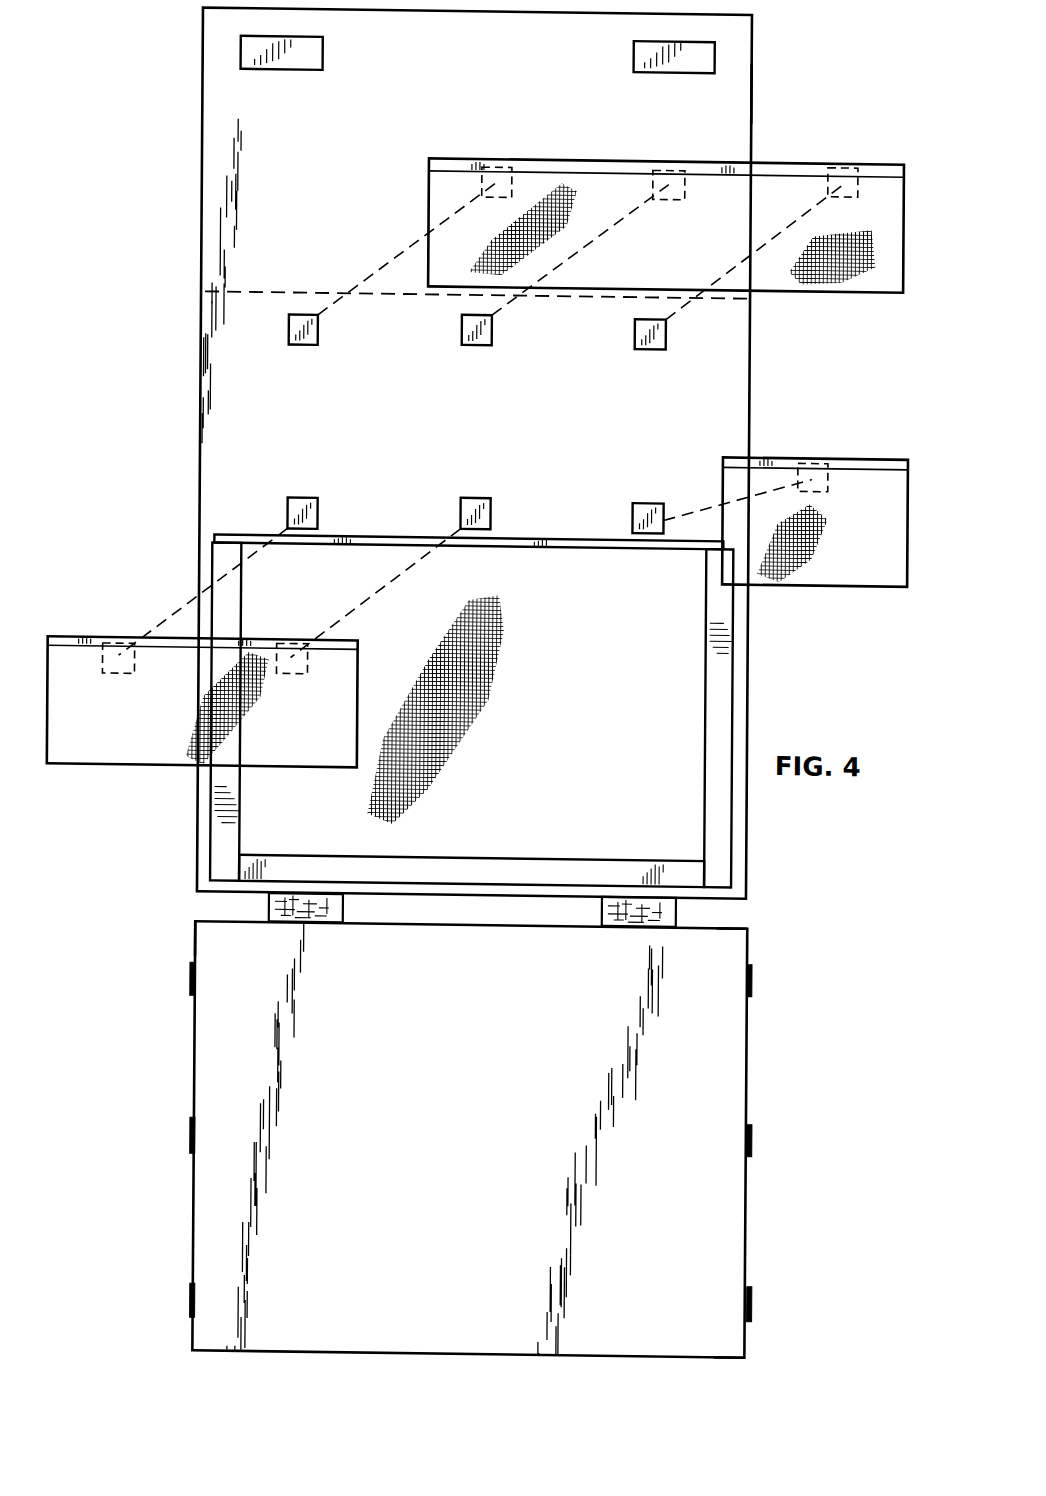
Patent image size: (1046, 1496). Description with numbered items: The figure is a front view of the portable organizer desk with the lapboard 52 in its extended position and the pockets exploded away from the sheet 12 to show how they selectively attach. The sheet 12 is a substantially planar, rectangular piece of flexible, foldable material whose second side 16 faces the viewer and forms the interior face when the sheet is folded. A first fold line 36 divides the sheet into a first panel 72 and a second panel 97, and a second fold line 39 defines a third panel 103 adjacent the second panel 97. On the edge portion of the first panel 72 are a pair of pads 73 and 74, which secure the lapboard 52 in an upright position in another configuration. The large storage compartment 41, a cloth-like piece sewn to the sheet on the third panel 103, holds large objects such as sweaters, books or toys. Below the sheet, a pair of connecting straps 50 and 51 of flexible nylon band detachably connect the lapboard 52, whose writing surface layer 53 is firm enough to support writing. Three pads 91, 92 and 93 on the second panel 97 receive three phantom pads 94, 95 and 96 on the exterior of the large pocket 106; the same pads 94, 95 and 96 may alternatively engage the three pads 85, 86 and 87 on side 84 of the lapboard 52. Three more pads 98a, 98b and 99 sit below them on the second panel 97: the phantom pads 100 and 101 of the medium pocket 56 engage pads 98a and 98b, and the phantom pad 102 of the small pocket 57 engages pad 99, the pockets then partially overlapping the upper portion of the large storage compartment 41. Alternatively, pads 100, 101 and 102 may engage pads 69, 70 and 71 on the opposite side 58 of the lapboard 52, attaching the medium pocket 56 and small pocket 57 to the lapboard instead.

The sheet 12 is at (749, 37).
The second side 16 is at (749, 93).
The first fold line 36 is at (293, 295).
The second fold line 39 is at (212, 540).
The large storage compartment 41 is at (735, 835).
The connecting strap 50 is at (325, 924).
The connecting strap 51 is at (628, 924).
The lapboard 52 is at (750, 945).
The writing surface layer 53 is at (436, 1130).
The medium pocket 56 is at (77, 641).
The small pocket 57 is at (766, 457).
The side of the lapboard 58 is at (750, 1353).
The pad 69 is at (758, 1300).
The pad 70 is at (757, 1137).
The pad 71 is at (756, 977).
The first panel 72 is at (200, 225).
The pad 73 is at (320, 55).
The pad 74 is at (631, 55).
The side of the lapboard 84 is at (198, 935).
The pad 85 is at (193, 982).
The pad 86 is at (194, 1139).
The pad 87 is at (195, 1304).
The pad 91 is at (303, 347).
The pad 92 is at (476, 345).
The pad 93 is at (650, 347).
The pad 94 is at (497, 172).
The pad 95 is at (668, 172).
The pad 96 is at (840, 168).
The second panel 97 is at (215, 345).
The pad 98a is at (305, 500).
The pad 98b is at (478, 498).
The pad 99 is at (640, 501).
The pad 100 is at (120, 652).
The pad 101 is at (292, 650).
The pad 102 is at (820, 465).
The third panel 103 is at (213, 833).
The large pocket 106 is at (776, 287).